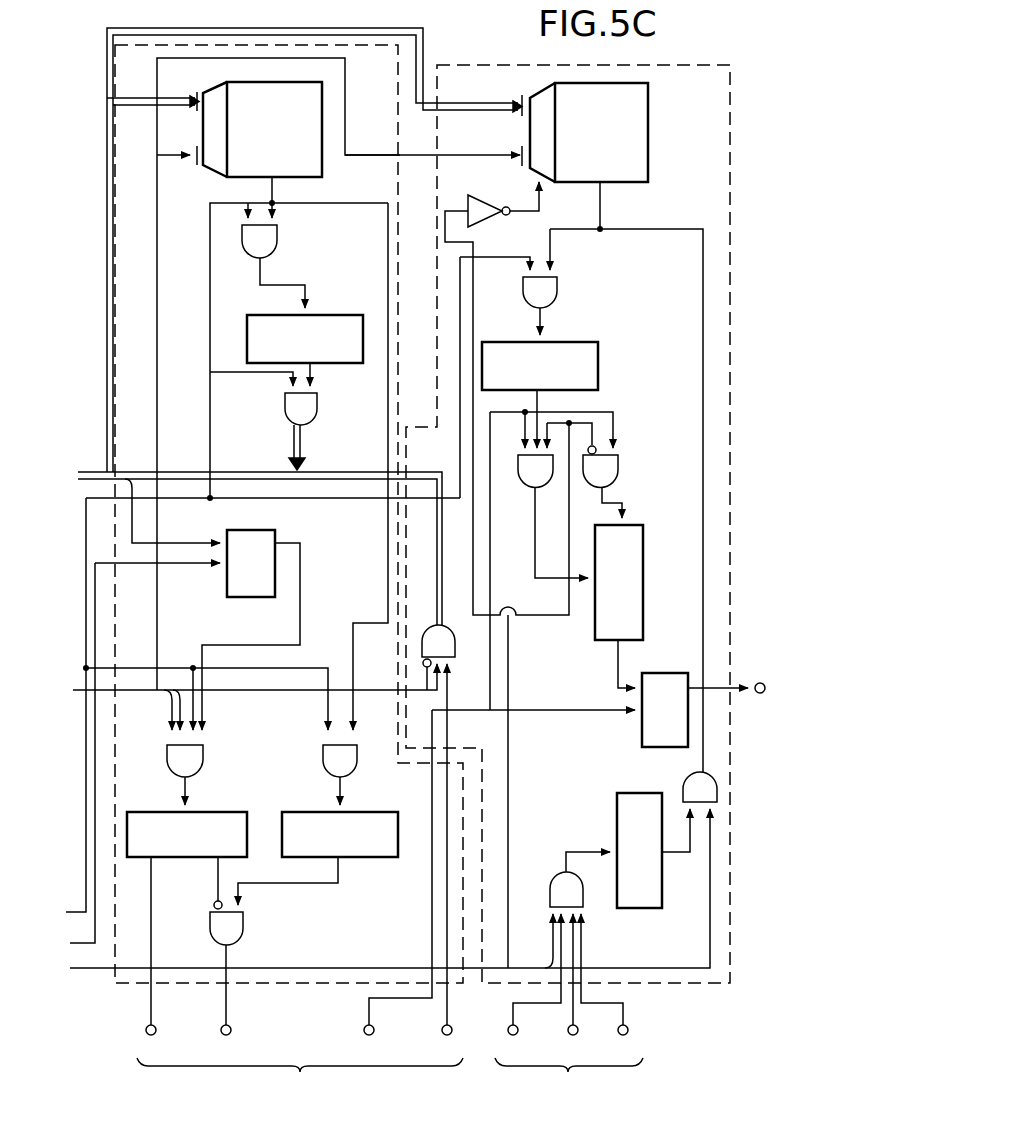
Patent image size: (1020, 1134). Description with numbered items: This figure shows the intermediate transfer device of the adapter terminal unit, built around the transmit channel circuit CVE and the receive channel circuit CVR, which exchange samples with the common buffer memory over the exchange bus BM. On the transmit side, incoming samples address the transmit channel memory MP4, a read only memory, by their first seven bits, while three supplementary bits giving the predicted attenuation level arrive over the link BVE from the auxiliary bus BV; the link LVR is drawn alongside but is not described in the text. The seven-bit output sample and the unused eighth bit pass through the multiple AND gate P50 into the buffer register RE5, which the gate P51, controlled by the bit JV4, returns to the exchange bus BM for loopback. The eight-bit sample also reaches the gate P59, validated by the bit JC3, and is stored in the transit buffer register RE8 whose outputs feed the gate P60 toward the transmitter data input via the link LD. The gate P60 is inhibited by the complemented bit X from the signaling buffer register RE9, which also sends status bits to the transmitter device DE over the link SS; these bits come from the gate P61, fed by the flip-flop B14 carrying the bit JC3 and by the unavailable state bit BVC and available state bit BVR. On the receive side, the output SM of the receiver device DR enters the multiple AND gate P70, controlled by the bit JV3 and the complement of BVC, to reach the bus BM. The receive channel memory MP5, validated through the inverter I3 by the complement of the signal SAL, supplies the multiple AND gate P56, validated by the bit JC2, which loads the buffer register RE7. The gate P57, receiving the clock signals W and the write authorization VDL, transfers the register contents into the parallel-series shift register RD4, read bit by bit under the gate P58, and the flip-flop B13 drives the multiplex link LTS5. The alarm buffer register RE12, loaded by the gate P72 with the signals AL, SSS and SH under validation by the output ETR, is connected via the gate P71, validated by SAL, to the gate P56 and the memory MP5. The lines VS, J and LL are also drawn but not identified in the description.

The transmit channel memory MP4 is at (312, 166).
The receive channel memory MP5 is at (640, 163).
The multiple AND gate P50 is at (282, 248).
The gate P51 is at (312, 412).
The multiple AND gate P56 is at (553, 290).
The gate P57 is at (532, 494).
The gate P58 is at (612, 478).
The gate P59 is at (328, 760).
The gate P60 is at (246, 930).
The gate P61 is at (198, 760).
The multiple AND gate P70 is at (450, 668).
The gate P71 is at (688, 786).
The multiple AND gate P72 is at (558, 875).
The buffer register RE5 is at (320, 322).
The buffer register RE7 is at (600, 360).
The transit buffer register RE8 is at (355, 822).
The signaling buffer register RE9 is at (202, 822).
The alarm buffer register RE12 is at (616, 828).
The parallel-series shift register RD4 is at (634, 558).
The flip-flop B13 is at (648, 738).
The flip-flop B14 is at (232, 600).
The inverter I3 is at (472, 197).
The transmit channel circuit CVE is at (142, 973).
The receive channel circuit CVR is at (483, 76).
The receive link LVR is at (386, 154).
The link BVE is at (186, 150).
The bit JC3 is at (210, 297).
The bit JV4 is at (272, 382).
The bit JC2 is at (490, 258).
The bit JV3 is at (422, 686).
The least significant binary signal SAL is at (474, 304).
The write authorization VDL is at (522, 620).
The exchange bus BM is at (243, 545).
The auxiliary bus BV is at (242, 682).
The unavailable state bit BVC is at (166, 710).
The available state bit BVR is at (176, 722).
The signal line VS is at (196, 568).
The signal line J is at (59, 911).
The signal line LL is at (376, 893).
The complemented bit X is at (215, 870).
The output of write authorization flip-flop ETR is at (550, 960).
The internal multiplex link LTS5 is at (727, 679).
The link SS is at (151, 960).
The link LD is at (227, 1004).
The clock signals W is at (496, 887).
The receiver output SM is at (444, 864).
The signal AL is at (530, 989).
The signal SSS is at (571, 989).
The signal SH is at (607, 989).
The transmitter device DE is at (300, 1077).
The receiver device DR is at (569, 1077).